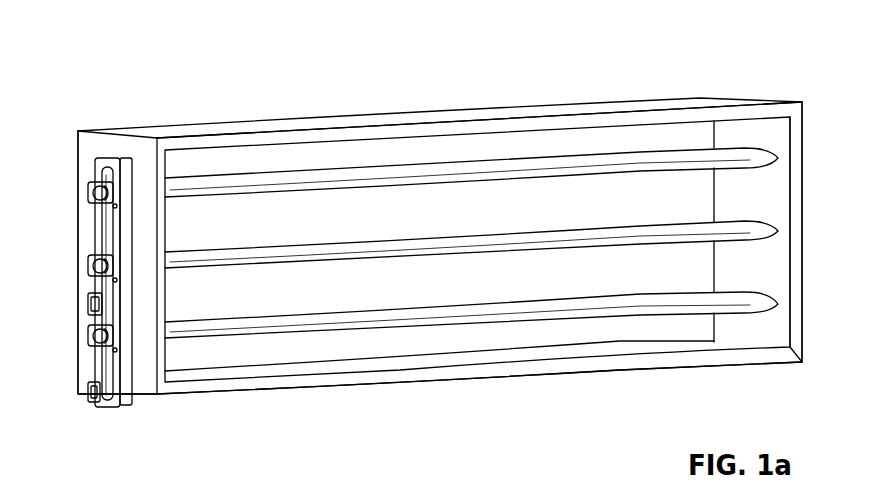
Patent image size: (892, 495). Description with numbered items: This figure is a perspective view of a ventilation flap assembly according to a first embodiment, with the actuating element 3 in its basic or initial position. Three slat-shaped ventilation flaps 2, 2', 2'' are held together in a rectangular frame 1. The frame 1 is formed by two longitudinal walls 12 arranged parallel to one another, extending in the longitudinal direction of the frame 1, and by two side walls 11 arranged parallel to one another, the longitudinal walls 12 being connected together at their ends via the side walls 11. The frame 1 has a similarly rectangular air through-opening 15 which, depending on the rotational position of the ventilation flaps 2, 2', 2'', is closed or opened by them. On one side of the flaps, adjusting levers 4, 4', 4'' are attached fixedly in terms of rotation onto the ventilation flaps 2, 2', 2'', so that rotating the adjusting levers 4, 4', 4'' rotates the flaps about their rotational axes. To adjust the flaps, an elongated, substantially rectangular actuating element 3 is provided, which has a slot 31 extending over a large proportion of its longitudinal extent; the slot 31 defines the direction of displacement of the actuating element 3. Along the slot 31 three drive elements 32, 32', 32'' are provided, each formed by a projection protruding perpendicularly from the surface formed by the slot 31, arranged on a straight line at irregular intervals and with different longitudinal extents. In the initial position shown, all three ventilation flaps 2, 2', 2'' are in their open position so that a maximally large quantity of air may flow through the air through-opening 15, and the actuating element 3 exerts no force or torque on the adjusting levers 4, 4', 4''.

The frame 1 is at (448, 130).
The ventilation flap 2 is at (471, 115).
The ventilation flap 2' is at (471, 339).
The ventilation flap 2'' is at (471, 374).
The actuating element 3 is at (118, 382).
The adjusting lever 4 is at (108, 225).
The adjusting lever 4' is at (141, 224).
The adjusting lever 4'' is at (152, 392).
The side wall 11 is at (800, 143).
The longitudinal wall 12 is at (263, 140).
The air through-opening 15 is at (380, 298).
The slot 31 is at (110, 372).
The drive element 32 is at (73, 241).
The drive element 32' is at (73, 296).
The drive element 32'' is at (110, 421).